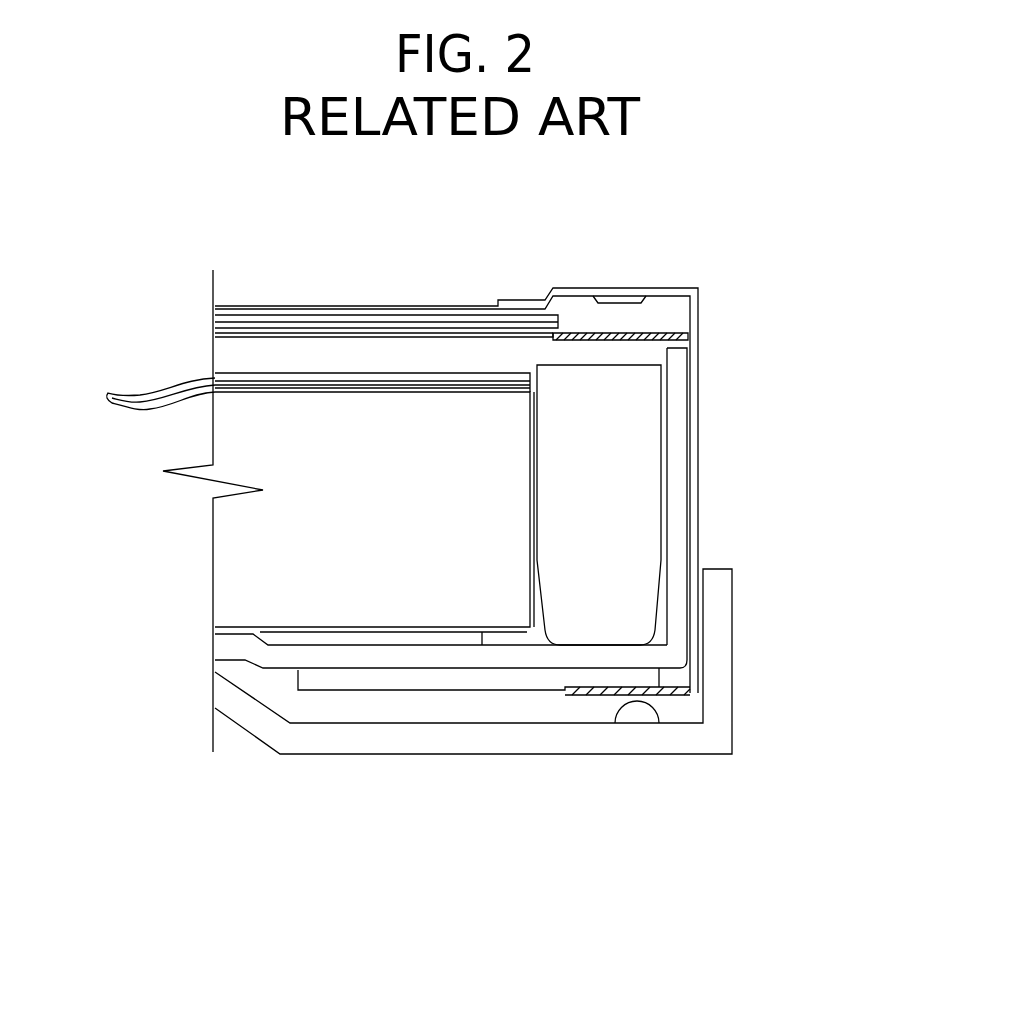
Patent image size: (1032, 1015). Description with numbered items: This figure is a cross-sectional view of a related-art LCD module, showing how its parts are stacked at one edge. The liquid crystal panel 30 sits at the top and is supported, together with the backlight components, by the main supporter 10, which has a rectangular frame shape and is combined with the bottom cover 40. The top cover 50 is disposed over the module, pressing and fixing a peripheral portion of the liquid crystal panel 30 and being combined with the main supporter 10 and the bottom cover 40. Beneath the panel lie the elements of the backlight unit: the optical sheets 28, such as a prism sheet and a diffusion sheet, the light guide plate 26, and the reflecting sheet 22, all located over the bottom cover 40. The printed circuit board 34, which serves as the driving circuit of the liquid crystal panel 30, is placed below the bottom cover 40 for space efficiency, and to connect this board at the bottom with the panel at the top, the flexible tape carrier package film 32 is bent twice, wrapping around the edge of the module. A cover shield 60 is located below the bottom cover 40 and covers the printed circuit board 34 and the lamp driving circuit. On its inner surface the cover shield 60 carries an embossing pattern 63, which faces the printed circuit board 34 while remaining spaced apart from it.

The main supporter 10 is at (620, 446).
The reflecting sheet 22 is at (213, 630).
The light guide plate 26 is at (233, 553).
The optical sheets 28 is at (292, 389).
The liquid crystal panel 30 is at (206, 306).
The tape carrier package film 32 is at (583, 332).
The printed circuit board 34 is at (478, 680).
The bottom cover 40 is at (688, 557).
The top cover 50 is at (700, 312).
The cover shield 60 is at (720, 725).
The embossing pattern 63 is at (638, 716).